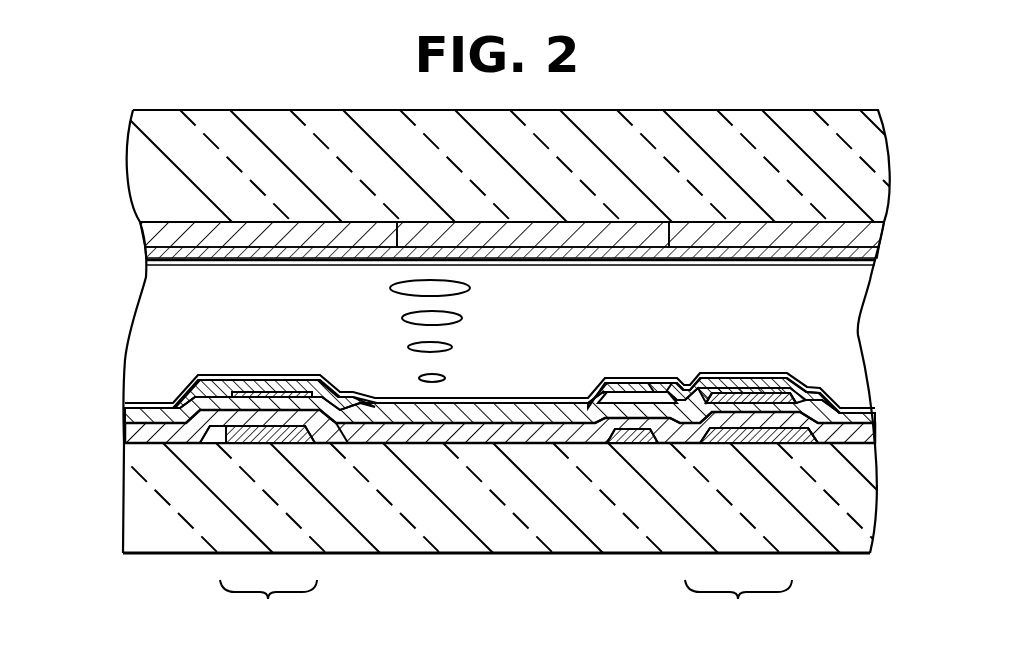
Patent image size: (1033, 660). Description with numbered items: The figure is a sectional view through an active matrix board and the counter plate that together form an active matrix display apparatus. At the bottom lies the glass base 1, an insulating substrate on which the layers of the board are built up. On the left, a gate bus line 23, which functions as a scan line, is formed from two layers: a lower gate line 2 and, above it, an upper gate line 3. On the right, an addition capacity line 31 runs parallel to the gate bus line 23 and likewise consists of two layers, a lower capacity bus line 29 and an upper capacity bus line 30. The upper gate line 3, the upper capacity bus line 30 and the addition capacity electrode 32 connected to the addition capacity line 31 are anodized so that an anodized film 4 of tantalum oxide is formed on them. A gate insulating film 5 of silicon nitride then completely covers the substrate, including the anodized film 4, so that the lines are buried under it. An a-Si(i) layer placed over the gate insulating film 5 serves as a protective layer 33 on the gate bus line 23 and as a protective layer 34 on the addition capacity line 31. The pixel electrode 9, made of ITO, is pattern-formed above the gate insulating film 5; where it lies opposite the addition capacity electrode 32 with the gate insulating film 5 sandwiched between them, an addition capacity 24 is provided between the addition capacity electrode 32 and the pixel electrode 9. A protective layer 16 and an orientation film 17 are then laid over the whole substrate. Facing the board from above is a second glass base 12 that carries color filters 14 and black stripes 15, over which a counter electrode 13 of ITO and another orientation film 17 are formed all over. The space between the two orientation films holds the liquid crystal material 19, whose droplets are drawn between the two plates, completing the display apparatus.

The glass base 1 is at (516, 553).
The lower gate line 2 is at (272, 445).
The upper gate line 3 is at (224, 445).
The anodized film 4 is at (345, 445).
The gate insulating film 5 is at (430, 445).
The pixel electrode 9 is at (509, 418).
The glass base 12 is at (146, 178).
The counter electrode 13 is at (536, 252).
The color filter 14 is at (481, 240).
The black stripe 15 is at (268, 238).
The protective layer 16 is at (310, 384).
The orientation film 17 is at (583, 262).
The liquid crystal layer 19 is at (860, 333).
The gate bus line 23 is at (268, 604).
The addition capacity 24 is at (658, 372).
The lower capacity bus line 29 is at (757, 443).
The upper capacity bus line 30 is at (733, 443).
The addition capacity line 31 is at (738, 605).
The addition capacity electrode 32 is at (624, 443).
The protective layer 33 is at (260, 384).
The protective layer 34 is at (783, 388).